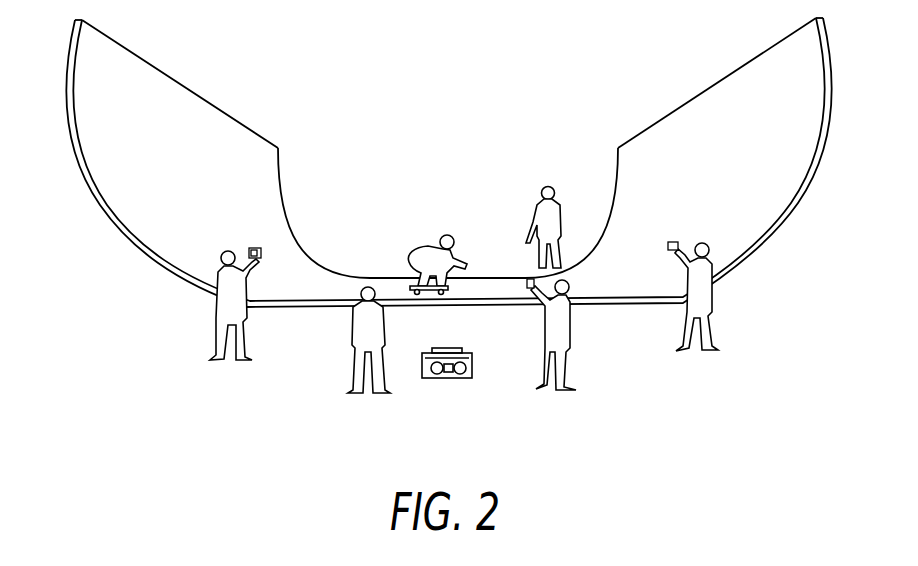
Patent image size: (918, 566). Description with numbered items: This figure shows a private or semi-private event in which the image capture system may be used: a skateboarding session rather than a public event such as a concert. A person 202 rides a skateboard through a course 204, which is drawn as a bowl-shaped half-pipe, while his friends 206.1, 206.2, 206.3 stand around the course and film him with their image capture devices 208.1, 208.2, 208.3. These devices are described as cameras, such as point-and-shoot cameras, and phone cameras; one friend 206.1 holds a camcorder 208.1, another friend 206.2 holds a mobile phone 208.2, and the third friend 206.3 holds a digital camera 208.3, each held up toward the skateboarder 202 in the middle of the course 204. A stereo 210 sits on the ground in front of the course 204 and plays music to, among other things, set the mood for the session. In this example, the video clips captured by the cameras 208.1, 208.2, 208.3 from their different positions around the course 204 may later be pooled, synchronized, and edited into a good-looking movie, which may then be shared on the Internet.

The person 202 is at (442, 233).
The course 204 is at (235, 120).
The friend 206.1 is at (223, 308).
The friend 206.2 is at (567, 333).
The friend 206.3 is at (714, 297).
The image capture device 208.1 is at (258, 263).
The image capture device 208.2 is at (531, 291).
The image capture device 208.3 is at (672, 253).
The stereo 210 is at (444, 348).